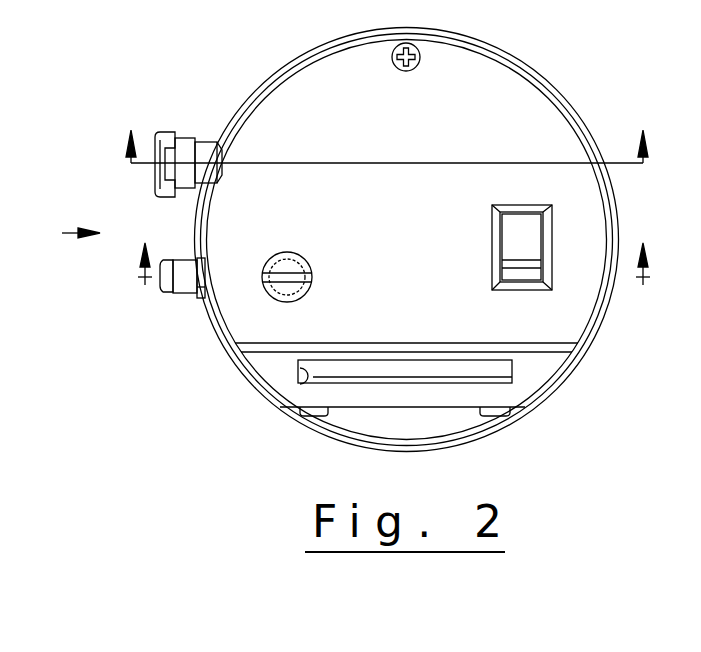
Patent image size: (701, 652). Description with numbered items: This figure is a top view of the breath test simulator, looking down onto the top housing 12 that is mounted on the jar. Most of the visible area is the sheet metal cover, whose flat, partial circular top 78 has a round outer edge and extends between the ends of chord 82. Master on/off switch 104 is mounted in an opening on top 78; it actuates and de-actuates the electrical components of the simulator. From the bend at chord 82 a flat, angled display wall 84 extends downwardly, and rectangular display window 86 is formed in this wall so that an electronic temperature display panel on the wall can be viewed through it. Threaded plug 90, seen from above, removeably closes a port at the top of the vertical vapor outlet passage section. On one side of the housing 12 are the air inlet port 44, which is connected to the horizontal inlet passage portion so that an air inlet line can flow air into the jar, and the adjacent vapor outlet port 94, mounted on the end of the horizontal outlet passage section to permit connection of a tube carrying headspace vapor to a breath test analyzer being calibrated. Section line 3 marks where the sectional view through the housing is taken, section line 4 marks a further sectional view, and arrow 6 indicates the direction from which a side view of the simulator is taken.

The top housing 12 is at (270, 42).
The top 78 is at (523, 112).
The air inlet port 44 is at (193, 138).
The vapor outlet port 94 is at (183, 296).
The threaded plug 90 is at (289, 265).
The master on/off switch 104 is at (510, 240).
The chord 82 is at (296, 348).
The rectangular display window 86 is at (310, 383).
The display wall 84 is at (533, 381).
The line 3-- 3 is at (387, 166).
The line 4-- 4 is at (394, 277).
The arrow 6 is at (71, 233).